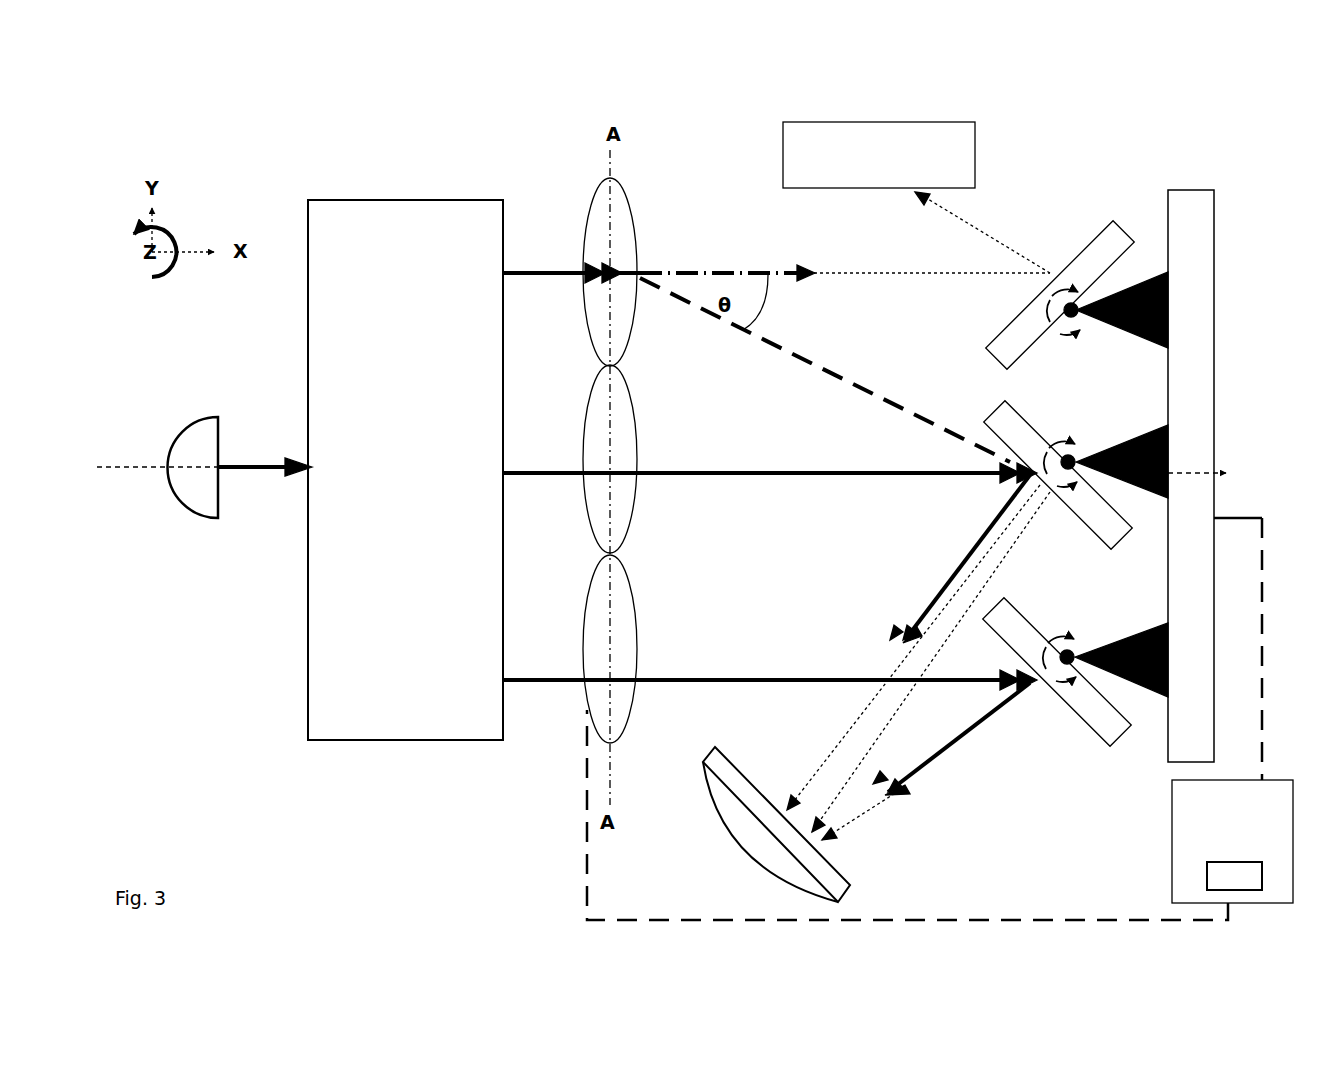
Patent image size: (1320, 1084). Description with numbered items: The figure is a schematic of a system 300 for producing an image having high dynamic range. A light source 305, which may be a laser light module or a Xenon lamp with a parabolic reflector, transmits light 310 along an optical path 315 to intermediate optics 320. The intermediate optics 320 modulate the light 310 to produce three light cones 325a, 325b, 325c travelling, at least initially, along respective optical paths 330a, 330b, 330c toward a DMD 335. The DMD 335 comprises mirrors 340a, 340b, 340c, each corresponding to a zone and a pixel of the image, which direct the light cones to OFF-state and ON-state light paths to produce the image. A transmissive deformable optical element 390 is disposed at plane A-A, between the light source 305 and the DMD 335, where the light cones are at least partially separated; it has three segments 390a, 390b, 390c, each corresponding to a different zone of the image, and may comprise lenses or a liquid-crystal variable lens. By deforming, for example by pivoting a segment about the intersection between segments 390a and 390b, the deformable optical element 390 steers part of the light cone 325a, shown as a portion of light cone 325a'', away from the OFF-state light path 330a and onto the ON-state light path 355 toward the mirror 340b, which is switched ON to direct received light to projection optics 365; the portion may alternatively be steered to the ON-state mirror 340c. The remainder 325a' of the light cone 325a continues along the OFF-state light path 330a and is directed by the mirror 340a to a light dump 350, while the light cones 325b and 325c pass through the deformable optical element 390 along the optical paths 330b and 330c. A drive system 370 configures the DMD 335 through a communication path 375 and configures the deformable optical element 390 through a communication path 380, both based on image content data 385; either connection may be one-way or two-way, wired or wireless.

The system 300 is at (257, 158).
The light source 305 is at (215, 518).
The light 310 is at (262, 470).
The optical path 315 is at (112, 465).
The intermediate optics 320 is at (405, 470).
The light cone 325a is at (571, 232).
The remainder of light cone 325a' is at (727, 231).
The portion of light cone 325a'' is at (825, 370).
The light cone 325b is at (515, 470).
The light cone 325c is at (515, 675).
The optical path 330a is at (875, 278).
The optical path 330b is at (825, 760).
The optical path 330c is at (872, 804).
The DMD 335 is at (1197, 476).
The mirror 340a is at (1085, 235).
The mirror 340b is at (1025, 420).
The mirror 340c is at (1022, 615).
The light dump 350 is at (879, 155).
The ON-state light path 355 is at (850, 770).
The projection optics 365 is at (714, 795).
The drive system 370 is at (1232, 841).
The communication path 375 is at (1248, 516).
The communication path 380 is at (1030, 918).
The image content data 385 is at (1234, 876).
The deformable optical element 390 is at (598, 176).
The segment 390a is at (637, 206).
The segment 390b is at (637, 490).
The segment 390c is at (637, 590).